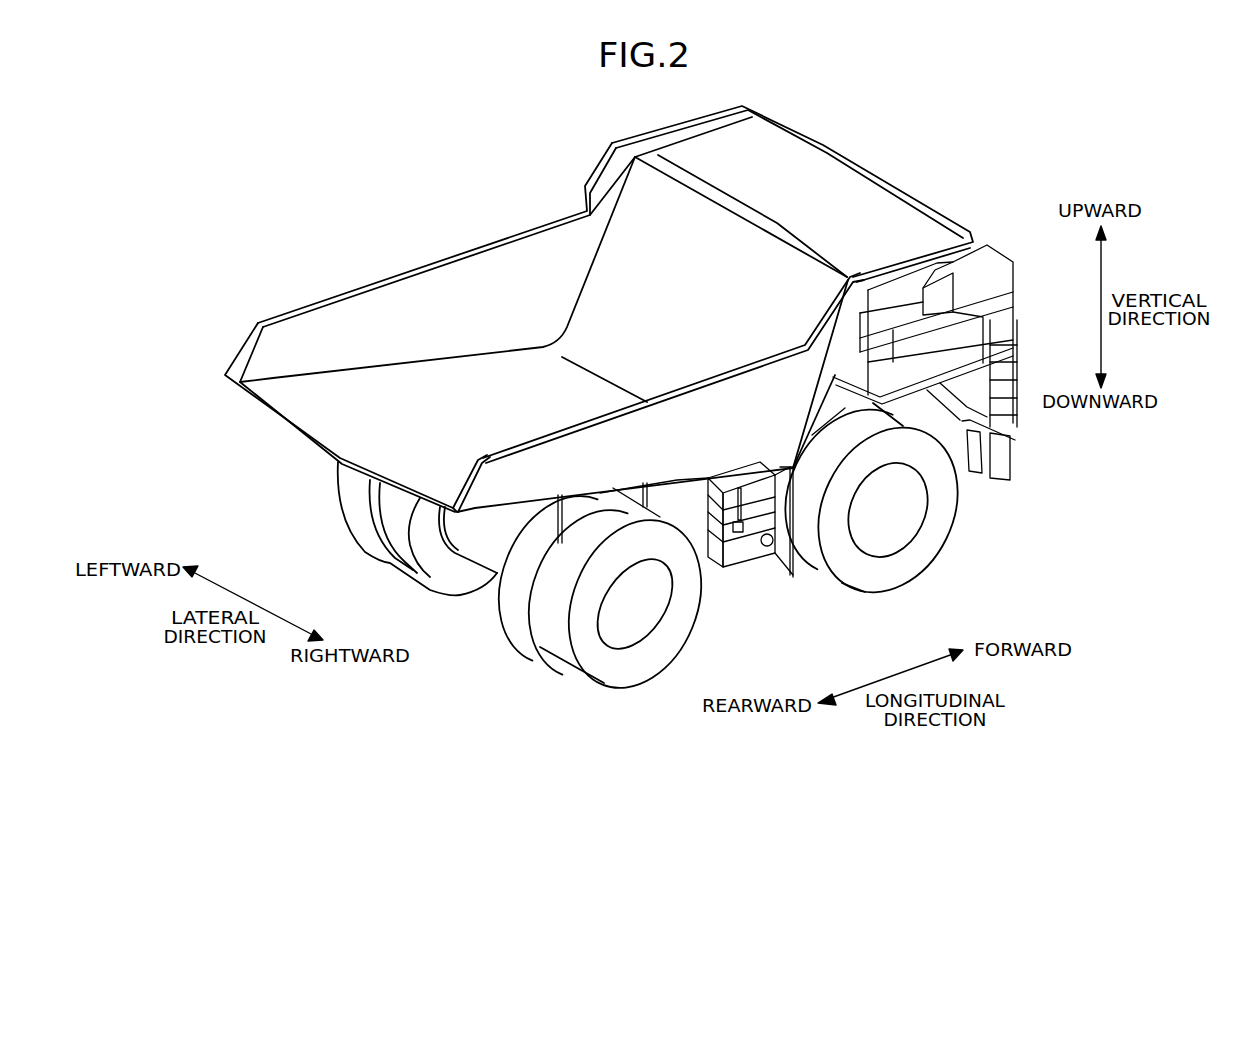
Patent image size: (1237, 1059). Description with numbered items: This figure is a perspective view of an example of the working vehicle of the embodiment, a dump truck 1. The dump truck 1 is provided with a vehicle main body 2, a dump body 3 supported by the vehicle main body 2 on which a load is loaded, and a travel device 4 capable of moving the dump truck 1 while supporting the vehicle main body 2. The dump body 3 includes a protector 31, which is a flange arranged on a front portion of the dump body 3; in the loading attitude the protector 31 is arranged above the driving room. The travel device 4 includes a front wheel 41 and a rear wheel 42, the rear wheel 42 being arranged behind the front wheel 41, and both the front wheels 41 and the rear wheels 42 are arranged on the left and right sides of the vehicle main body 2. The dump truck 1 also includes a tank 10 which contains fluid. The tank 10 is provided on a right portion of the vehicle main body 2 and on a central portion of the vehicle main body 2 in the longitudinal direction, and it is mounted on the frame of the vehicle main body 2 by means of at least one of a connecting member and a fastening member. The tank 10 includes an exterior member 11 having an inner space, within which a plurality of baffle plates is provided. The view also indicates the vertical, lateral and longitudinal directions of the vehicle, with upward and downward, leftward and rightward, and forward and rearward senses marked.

The dump truck 1 is at (305, 214).
The vehicle main body 2 is at (1012, 477).
The dump body 3 is at (405, 266).
The protector 31 is at (852, 180).
The travel device 4 is at (482, 550).
The front wheel 41 is at (920, 556).
The rear wheel 42 is at (564, 650).
The tank 10 is at (746, 560).
The exterior member 11 is at (730, 562).